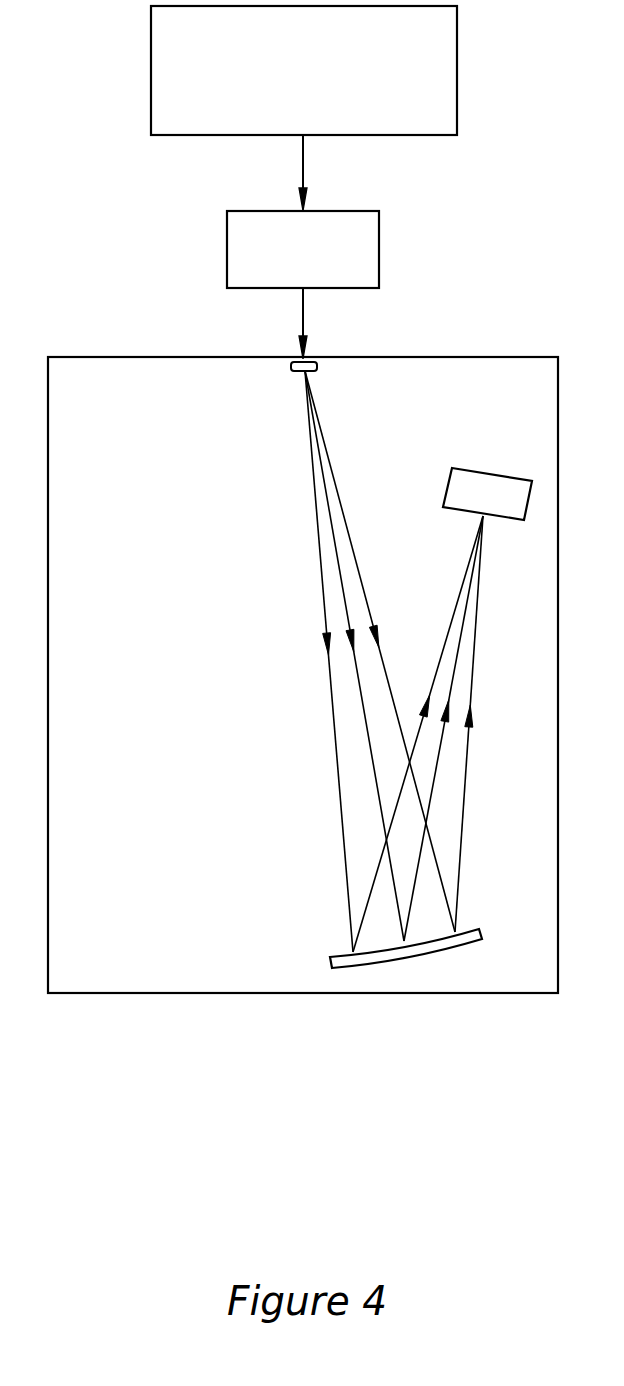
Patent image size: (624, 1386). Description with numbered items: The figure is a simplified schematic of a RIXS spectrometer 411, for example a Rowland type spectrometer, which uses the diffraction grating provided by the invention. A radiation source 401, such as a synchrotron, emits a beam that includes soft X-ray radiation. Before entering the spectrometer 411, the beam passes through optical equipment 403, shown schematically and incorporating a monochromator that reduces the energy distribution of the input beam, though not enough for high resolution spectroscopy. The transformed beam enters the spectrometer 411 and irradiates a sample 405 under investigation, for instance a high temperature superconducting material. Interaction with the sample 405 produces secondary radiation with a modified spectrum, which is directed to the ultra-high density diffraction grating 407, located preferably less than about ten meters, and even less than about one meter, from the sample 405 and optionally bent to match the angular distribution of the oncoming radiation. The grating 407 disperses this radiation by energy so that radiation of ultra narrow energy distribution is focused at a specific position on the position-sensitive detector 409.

The radiation source 401 is at (320, 88).
The optical equipment 403 is at (320, 259).
The sample 405 is at (284, 368).
The diffraction grating 407 is at (328, 957).
The position-sensitive detector 409 is at (469, 502).
The spectrometer 411 is at (79, 679).